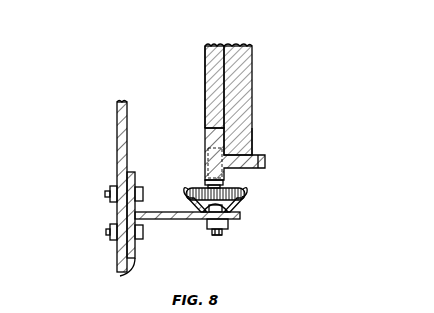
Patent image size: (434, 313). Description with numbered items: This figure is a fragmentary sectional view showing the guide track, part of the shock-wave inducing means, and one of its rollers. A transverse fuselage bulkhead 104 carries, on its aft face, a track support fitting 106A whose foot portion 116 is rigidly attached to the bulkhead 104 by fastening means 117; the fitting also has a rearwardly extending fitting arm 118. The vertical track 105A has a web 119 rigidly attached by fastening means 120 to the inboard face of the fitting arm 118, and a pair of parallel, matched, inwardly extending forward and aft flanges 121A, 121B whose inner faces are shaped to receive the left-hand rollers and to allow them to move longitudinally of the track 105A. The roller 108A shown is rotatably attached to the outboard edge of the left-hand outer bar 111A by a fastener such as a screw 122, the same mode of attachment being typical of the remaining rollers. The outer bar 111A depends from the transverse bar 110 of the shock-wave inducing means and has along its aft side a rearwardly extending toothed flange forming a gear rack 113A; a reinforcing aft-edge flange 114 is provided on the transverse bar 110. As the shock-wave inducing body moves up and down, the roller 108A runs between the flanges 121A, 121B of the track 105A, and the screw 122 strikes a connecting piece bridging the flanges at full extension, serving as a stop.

The transverse fuselage bulkhead 104 is at (117, 131).
The vertical track 105A is at (247, 209).
The track support fitting 106A is at (232, 221).
The roller 108A is at (230, 184).
The transverse bar 110 is at (205, 47).
The outer bar 111A is at (253, 113).
The gear rack 113A is at (253, 151).
The reinforcing aft-edge flange 114 is at (253, 54).
The foot portion 116 is at (128, 272).
The fastening means 117 is at (105, 195).
The fitting arm 118 is at (163, 224).
The web 119 is at (197, 215).
The fastening means 120 is at (215, 236).
The forward flange 121A is at (250, 196).
The aft flange 121B is at (192, 188).
The screw 122 is at (253, 140).